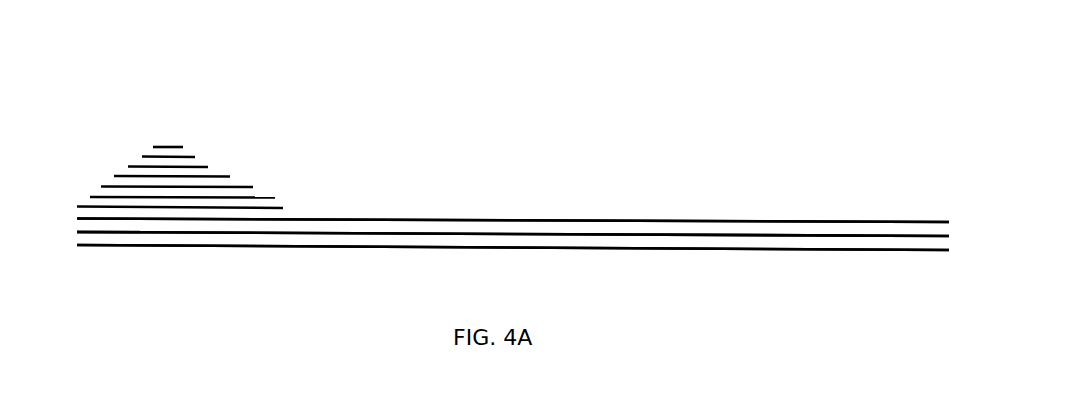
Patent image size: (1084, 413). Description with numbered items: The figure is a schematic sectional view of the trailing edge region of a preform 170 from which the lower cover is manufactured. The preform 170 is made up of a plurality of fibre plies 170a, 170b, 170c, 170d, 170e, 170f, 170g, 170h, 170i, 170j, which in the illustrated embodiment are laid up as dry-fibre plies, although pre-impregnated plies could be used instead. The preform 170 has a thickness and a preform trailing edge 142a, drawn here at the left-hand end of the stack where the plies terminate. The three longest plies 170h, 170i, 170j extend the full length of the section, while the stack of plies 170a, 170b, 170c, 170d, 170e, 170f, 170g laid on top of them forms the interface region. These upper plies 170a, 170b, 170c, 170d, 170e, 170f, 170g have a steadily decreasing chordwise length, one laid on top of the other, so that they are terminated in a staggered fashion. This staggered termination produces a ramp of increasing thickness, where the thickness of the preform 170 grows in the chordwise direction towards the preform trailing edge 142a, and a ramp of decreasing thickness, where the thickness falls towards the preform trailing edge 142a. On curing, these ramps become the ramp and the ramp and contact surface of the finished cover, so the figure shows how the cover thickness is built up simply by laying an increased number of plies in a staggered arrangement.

The preform 170 is at (503, 105).
The fibre ply 170a is at (167, 143).
The fibre ply 170b is at (193, 156).
The fibre ply 170c is at (208, 167).
The fibre ply 170d is at (223, 176).
The fibre ply 170e is at (250, 187).
The fibre ply 170f is at (265, 198).
The fibre ply 170g is at (252, 208).
The fibre ply 170h is at (517, 220).
The fibre ply 170i is at (668, 234).
The fibre ply 170j is at (390, 250).
The preform trailing edge 142a is at (72, 232).